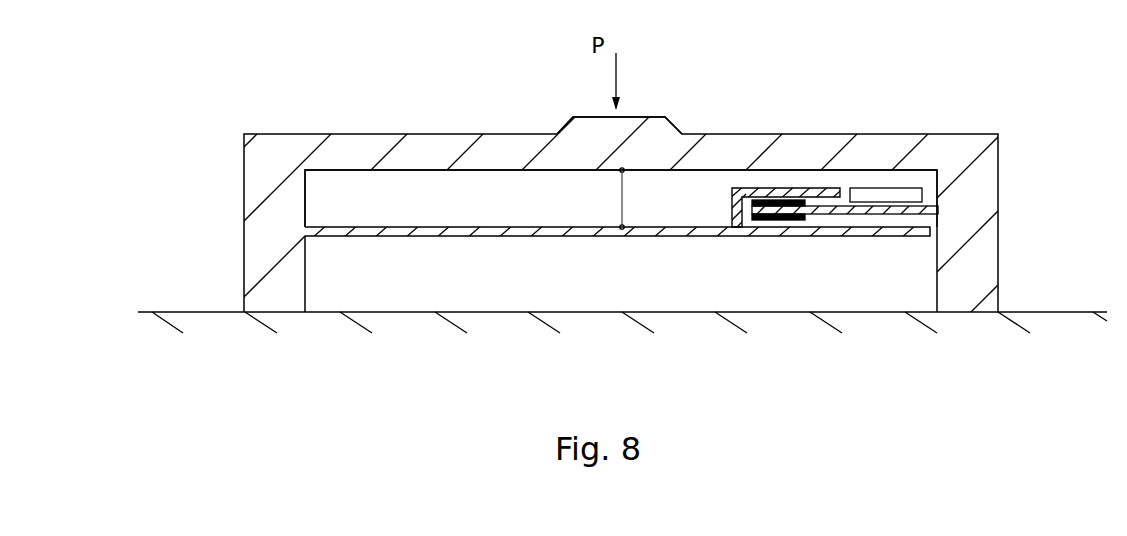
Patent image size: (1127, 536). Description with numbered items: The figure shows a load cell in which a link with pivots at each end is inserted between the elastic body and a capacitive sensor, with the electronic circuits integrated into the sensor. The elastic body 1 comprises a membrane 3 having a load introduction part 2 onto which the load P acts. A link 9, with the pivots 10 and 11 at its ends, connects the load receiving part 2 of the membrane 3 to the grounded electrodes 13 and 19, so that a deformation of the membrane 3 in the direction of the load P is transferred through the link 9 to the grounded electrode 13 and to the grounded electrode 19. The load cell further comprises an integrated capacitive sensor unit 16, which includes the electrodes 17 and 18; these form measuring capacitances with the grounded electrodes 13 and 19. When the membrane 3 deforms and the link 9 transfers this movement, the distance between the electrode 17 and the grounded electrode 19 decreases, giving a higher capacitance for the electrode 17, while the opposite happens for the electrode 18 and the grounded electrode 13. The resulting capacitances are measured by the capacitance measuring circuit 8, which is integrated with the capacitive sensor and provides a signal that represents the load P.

The elastic body 1 is at (972, 207).
The load introduction part 2 is at (663, 117).
The membrane 3 is at (410, 153).
The capacitance measuring circuit 8 is at (895, 199).
The link 9 is at (613, 198).
The pivot 10 is at (624, 169).
The pivot 11 is at (621, 229).
The grounded electrode 13 is at (322, 227).
The integrated capacitive sensor unit 16 is at (848, 213).
The electrode 17 is at (779, 199).
The electrode 18 is at (775, 220).
The grounded electrode 19 is at (732, 210).